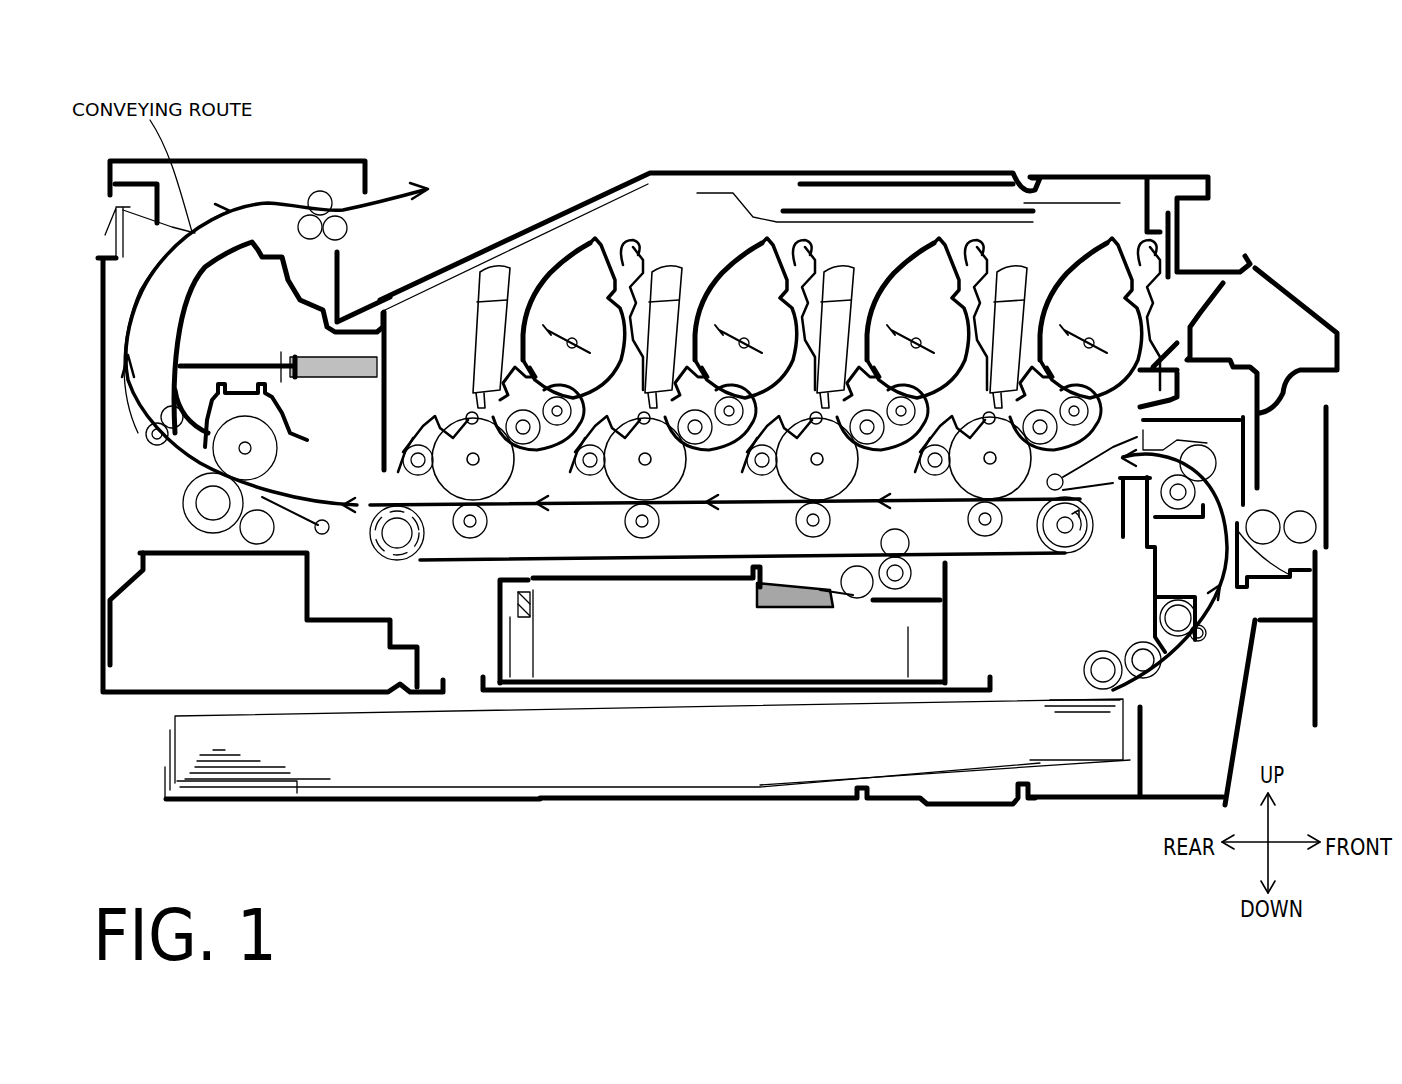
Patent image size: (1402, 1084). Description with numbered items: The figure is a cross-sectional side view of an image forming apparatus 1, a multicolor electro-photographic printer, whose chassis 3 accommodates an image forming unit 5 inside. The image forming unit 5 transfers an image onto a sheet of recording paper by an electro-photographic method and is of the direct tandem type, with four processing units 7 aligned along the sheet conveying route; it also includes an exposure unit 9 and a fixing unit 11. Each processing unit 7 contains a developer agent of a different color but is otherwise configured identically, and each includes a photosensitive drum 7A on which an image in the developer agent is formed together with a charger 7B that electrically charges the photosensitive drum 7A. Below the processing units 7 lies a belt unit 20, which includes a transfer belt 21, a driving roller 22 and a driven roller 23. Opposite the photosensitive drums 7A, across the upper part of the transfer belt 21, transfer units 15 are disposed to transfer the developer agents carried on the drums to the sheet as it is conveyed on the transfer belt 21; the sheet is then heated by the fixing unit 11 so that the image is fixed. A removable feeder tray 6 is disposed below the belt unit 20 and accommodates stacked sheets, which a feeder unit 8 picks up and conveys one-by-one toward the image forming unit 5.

The image forming apparatus 1 is at (1046, 164).
The chassis 3 is at (682, 170).
The image forming unit 5 is at (1036, 264).
The feeder tray 6 is at (167, 783).
The processing unit 7 is at (577, 430).
The photosensitive drum 7A is at (465, 430).
The charger 7B is at (430, 420).
The feeder unit 8 is at (1173, 663).
The exposure unit 9 is at (494, 266).
The fixing unit 11 is at (204, 467).
The transfer unit 15 is at (470, 540).
The belt unit 20 is at (430, 562).
The transfer belt 21 is at (735, 492).
The driving roller 22 is at (392, 560).
The driven roller 23 is at (1080, 543).